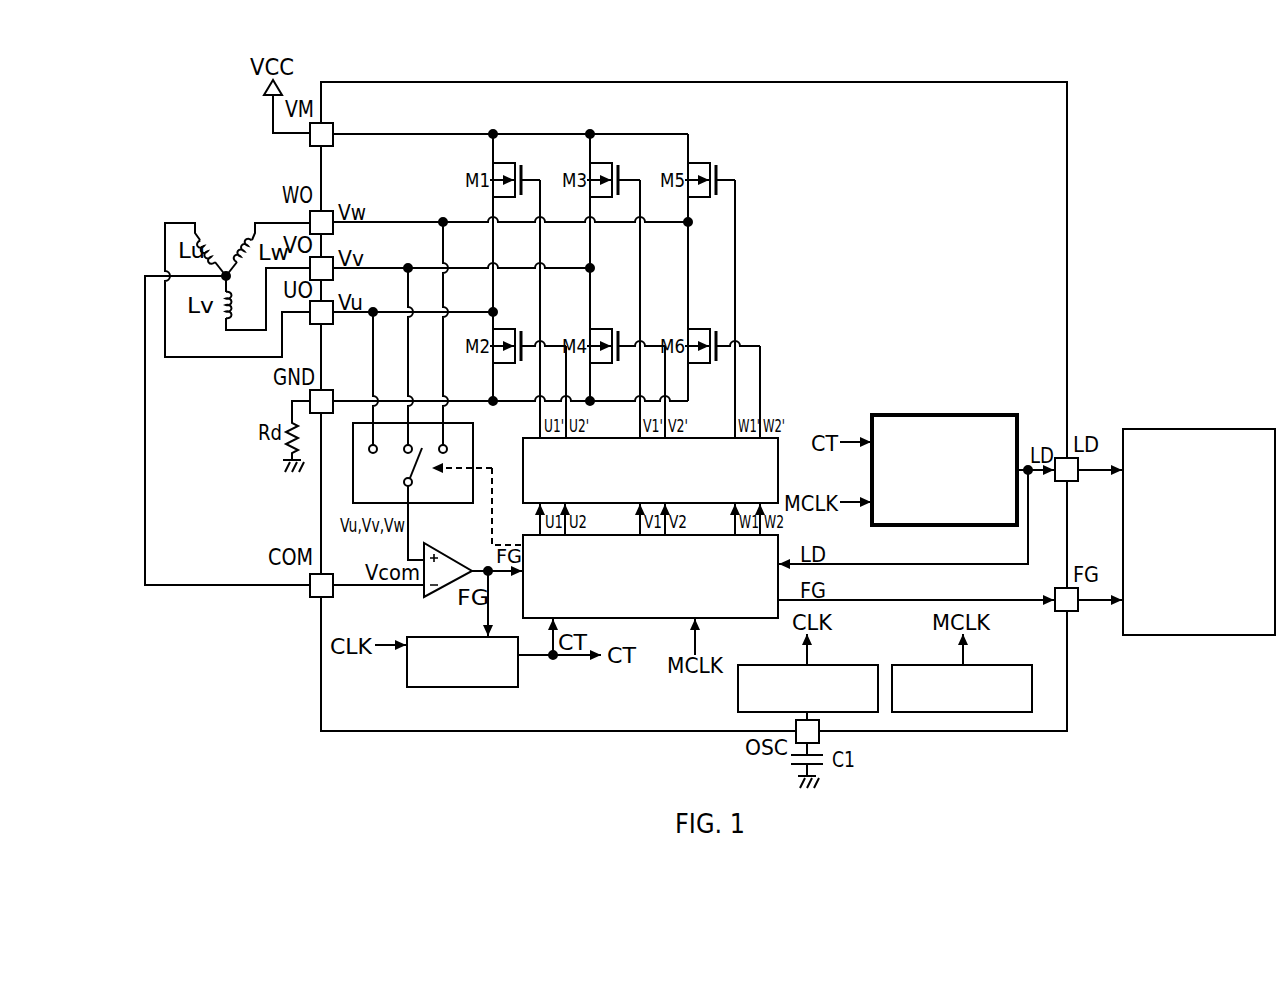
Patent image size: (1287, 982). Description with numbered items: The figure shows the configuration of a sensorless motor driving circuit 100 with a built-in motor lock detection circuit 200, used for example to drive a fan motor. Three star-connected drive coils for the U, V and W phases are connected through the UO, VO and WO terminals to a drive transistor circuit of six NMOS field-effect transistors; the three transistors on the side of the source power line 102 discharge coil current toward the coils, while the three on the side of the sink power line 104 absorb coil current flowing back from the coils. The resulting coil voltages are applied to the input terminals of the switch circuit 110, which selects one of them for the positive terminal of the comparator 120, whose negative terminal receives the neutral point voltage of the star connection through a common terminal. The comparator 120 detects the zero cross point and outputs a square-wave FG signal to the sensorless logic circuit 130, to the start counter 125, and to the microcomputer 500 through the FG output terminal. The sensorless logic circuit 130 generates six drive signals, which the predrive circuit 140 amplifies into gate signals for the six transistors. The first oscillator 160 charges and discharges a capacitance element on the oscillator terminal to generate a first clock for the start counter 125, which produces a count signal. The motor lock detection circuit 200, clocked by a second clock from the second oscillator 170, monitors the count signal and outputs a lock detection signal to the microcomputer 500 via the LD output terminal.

The sensorless motor driving circuit 100 is at (1067, 235).
The source power line 102 is at (428, 133).
The sink power line 104 is at (426, 400).
The switch circuit 110 is at (473, 442).
The comparator 120 is at (446, 556).
The start counter 125 is at (421, 636).
The sensorless logic circuit 130 is at (779, 553).
The predrive circuit 140 is at (779, 443).
The first oscillator 160 is at (850, 665).
The second oscillator 170 is at (1010, 665).
The motor lock detection circuit 200 is at (985, 415).
The microcomputer 500 is at (1172, 429).